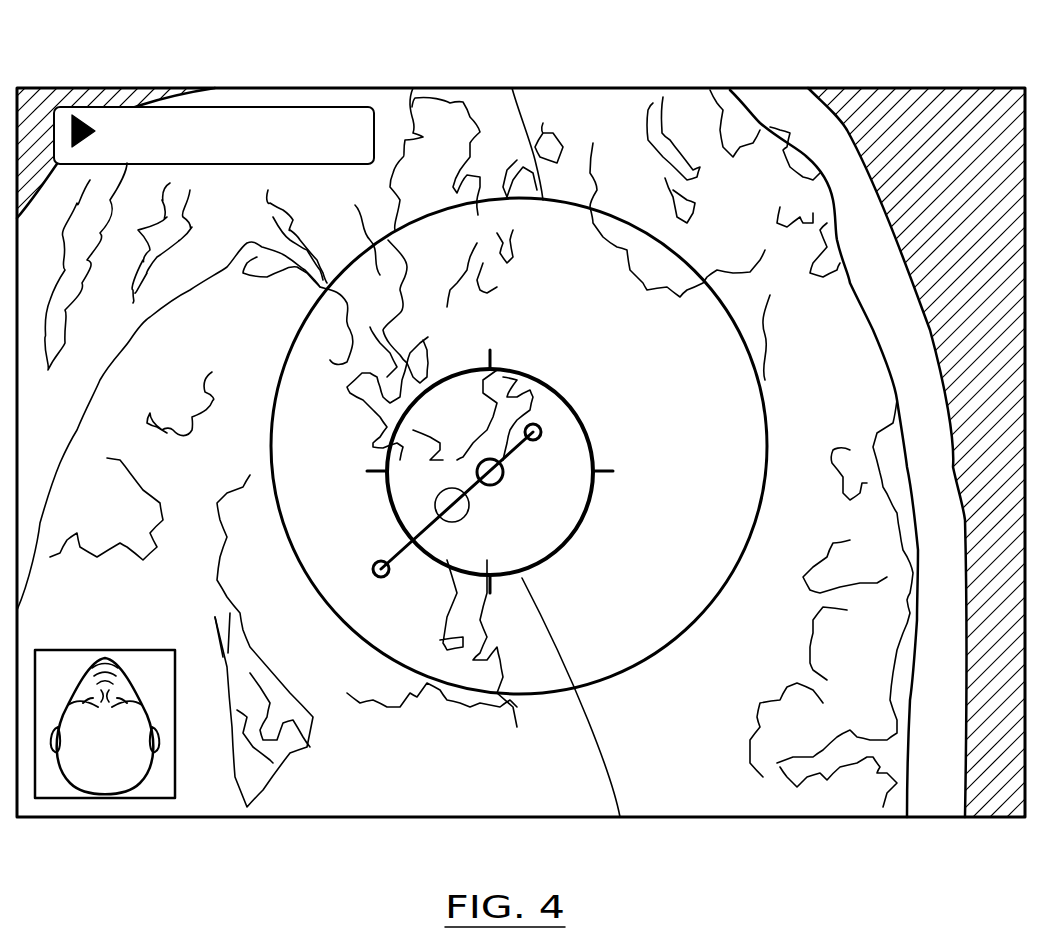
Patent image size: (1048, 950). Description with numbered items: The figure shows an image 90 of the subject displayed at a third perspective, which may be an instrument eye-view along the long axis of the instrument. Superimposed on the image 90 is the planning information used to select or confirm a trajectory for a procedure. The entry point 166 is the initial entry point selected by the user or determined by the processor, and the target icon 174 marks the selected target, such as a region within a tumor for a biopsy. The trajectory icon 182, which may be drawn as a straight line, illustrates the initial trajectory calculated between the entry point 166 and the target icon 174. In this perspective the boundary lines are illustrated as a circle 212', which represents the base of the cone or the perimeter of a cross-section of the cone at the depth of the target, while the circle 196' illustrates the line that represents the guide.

The image 90 is at (434, 52).
The circle 212' is at (519, 120).
The circle 196' is at (586, 720).
The entry point 166 is at (493, 483).
The trajectory icon 182 is at (512, 452).
The target icon 174 is at (381, 578).